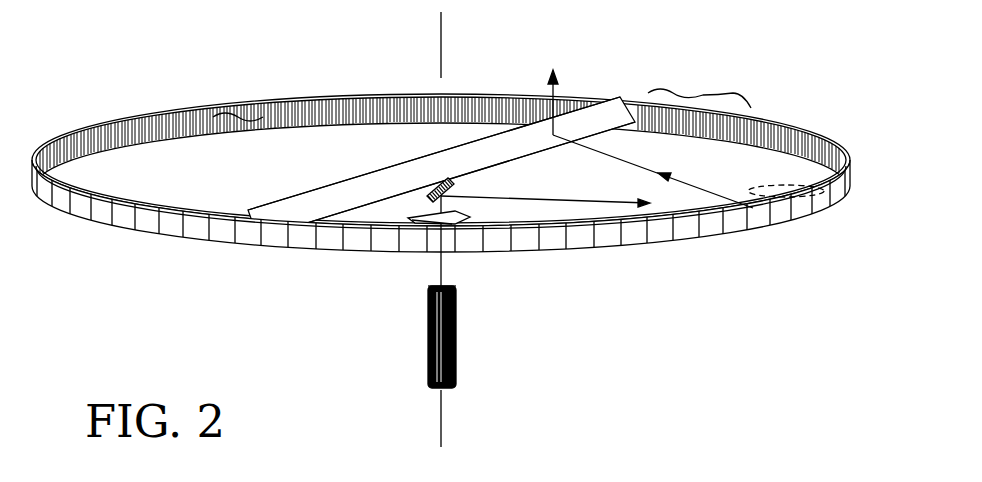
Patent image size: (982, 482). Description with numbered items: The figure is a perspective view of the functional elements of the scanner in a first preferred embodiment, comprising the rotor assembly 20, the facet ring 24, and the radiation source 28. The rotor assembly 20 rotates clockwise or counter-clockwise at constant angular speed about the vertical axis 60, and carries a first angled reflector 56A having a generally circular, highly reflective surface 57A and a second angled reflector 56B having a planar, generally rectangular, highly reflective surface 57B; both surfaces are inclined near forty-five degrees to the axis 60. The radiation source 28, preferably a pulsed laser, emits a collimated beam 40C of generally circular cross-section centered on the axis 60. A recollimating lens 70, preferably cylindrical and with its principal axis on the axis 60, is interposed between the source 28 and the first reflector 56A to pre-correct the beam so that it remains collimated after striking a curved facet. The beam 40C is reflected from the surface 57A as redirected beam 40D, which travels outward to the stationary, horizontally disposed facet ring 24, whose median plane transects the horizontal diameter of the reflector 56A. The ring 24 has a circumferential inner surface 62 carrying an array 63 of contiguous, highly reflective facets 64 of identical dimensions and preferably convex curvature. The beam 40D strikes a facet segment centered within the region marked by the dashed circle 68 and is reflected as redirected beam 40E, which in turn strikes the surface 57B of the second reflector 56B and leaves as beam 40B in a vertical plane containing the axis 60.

The rotor assembly 20 is at (133, 49).
The facet ring 24 is at (387, 94).
The radiation source 28 is at (458, 348).
The beam 40B is at (555, 94).
The collimated beam 40C is at (455, 288).
The redirected beam 40D is at (567, 203).
The redirected beam 40E is at (650, 170).
The first angled reflector 56A is at (420, 188).
The second angled reflector 56B is at (318, 205).
The highly reflective surface 57A is at (458, 186).
The highly reflective surface 57B is at (412, 175).
The vertical axis 60 is at (441, 237).
The circumferential inner surface 62 is at (240, 100).
The array 63 is at (700, 97).
The facets 64 is at (107, 203).
The dashed circle 68 is at (750, 192).
The recollimating lens 70 is at (420, 224).